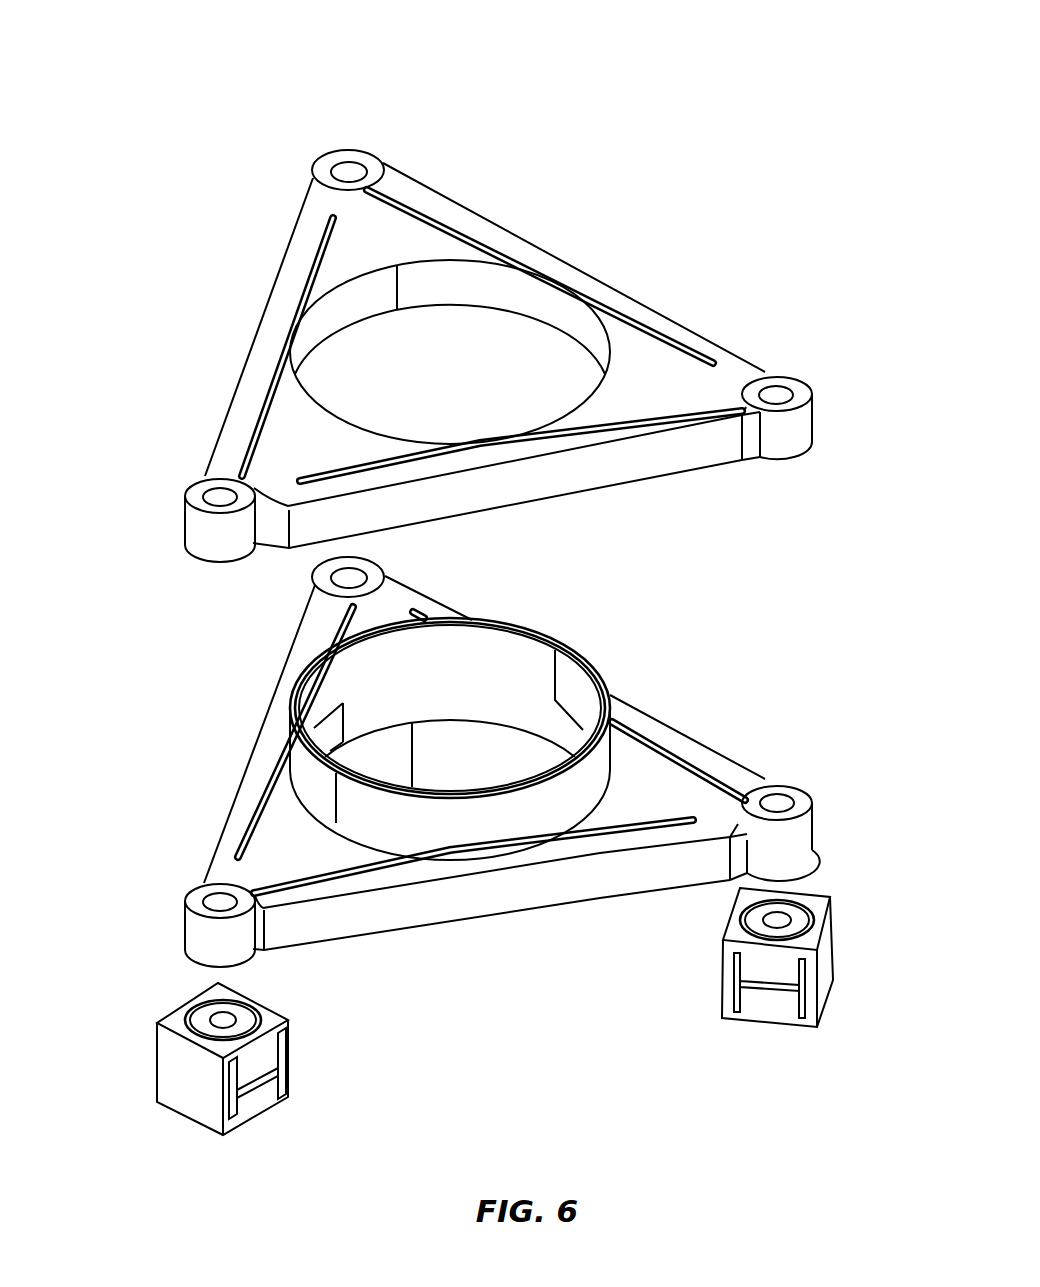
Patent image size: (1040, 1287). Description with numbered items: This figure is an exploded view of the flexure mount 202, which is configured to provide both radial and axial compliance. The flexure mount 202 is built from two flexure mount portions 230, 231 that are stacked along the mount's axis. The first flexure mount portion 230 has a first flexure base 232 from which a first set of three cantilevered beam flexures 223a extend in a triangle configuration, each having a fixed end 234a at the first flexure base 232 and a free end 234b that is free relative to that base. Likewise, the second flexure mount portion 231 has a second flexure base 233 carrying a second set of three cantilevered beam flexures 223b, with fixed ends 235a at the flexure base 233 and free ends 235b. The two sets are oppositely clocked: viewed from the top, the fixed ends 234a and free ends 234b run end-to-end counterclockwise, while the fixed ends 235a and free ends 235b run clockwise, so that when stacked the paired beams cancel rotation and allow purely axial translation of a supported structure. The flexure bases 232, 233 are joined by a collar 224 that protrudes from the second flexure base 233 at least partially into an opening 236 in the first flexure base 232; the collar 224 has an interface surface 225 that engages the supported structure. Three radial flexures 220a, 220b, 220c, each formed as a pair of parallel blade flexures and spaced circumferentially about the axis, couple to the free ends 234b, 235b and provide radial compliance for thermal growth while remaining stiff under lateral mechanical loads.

The flexure mount 202 is at (264, 43).
The first flexure mount portion 230 is at (504, 397).
The second flexure mount portion 231 is at (495, 795).
The first flexure base 232 is at (646, 356).
The second flexure base 233 is at (640, 790).
The opening 236 is at (358, 349).
The cantilevered beam flexures 223a is at (560, 480).
The cantilevered beam flexures 223b is at (490, 905).
The fixed ends 234a is at (292, 566).
The free ends 234b is at (777, 482).
The fixed ends 235a is at (700, 902).
The free ends 235b is at (292, 969).
The collar 224 is at (312, 782).
The interface surface 225 is at (482, 660).
The radial flexure 220a is at (133, 1062).
The radial flexure 220b is at (854, 951).
The radial flexure 220c is at (429, 749).